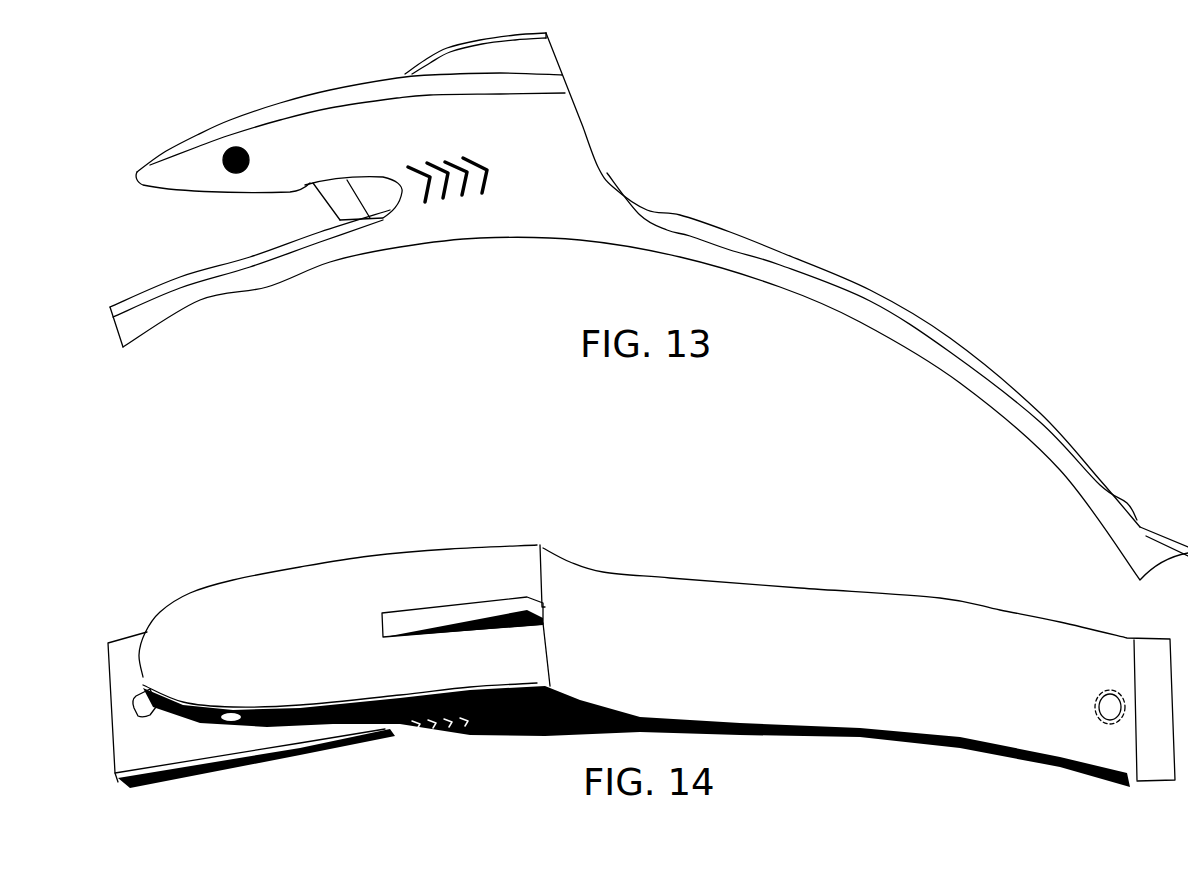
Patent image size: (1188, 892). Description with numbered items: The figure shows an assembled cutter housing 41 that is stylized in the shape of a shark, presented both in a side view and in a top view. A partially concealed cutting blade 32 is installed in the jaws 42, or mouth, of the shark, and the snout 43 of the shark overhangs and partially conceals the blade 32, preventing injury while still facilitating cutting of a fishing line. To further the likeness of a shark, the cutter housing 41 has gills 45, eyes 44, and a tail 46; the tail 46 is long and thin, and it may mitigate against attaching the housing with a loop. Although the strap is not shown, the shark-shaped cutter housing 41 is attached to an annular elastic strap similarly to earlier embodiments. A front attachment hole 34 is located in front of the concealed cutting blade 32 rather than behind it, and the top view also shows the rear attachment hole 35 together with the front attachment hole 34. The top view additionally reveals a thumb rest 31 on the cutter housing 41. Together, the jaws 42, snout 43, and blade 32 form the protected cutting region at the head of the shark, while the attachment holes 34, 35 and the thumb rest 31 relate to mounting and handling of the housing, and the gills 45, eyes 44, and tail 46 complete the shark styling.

In FIG. 13, the thumb rest 31 is at (583, 127).
In FIG. 14, the thumb rest 31 is at (563, 593).
In FIG. 13, the cutting blade 32 is at (342, 203).
In FIG. 14, the front attachment hole 34 is at (150, 708).
In FIG. 14, the rear attachment hole 35 is at (1110, 709).
In FIG. 13, the cutter housing 41 is at (730, 120).
In FIG. 14, the cutter housing 41 is at (767, 543).
In FIG. 13, the jaws 42 is at (387, 200).
In FIG. 14, the jaws 42 is at (380, 743).
In FIG. 13, the snout 43 is at (193, 167).
In FIG. 14, the snout 43 is at (225, 622).
In FIG. 13, the eyes 44 is at (236, 146).
In FIG. 14, the eyes 44 is at (233, 720).
In FIG. 13, the gills 45 is at (465, 197).
In FIG. 14, the gills 45 is at (473, 737).
In FIG. 13, the tail 46 is at (1043, 413).
In FIG. 14, the tail 46 is at (978, 722).